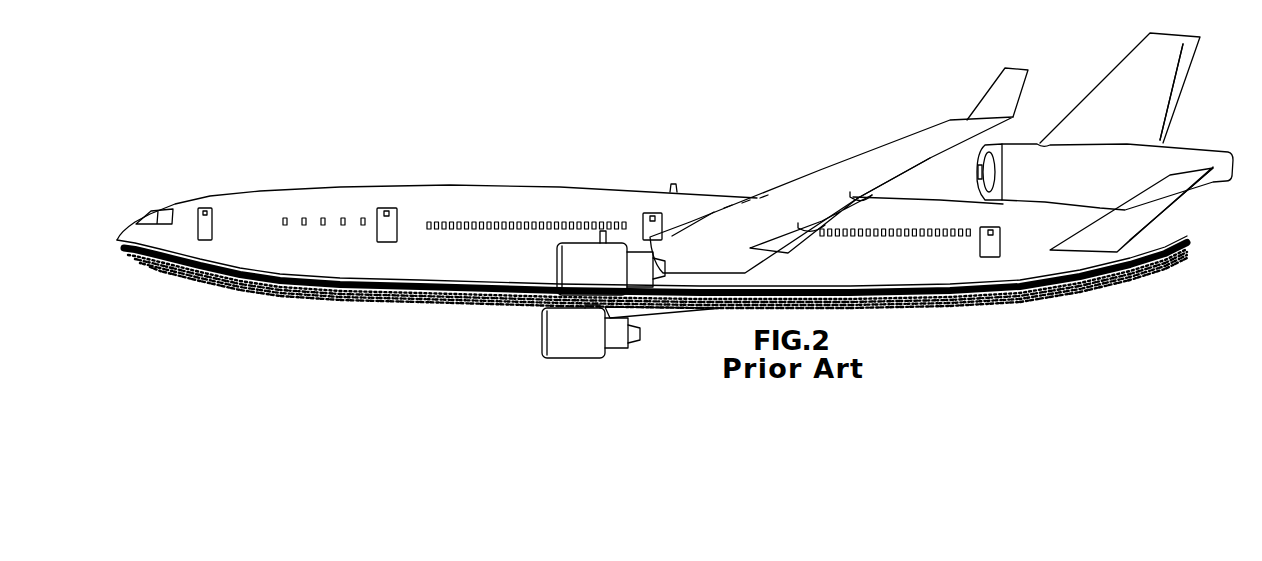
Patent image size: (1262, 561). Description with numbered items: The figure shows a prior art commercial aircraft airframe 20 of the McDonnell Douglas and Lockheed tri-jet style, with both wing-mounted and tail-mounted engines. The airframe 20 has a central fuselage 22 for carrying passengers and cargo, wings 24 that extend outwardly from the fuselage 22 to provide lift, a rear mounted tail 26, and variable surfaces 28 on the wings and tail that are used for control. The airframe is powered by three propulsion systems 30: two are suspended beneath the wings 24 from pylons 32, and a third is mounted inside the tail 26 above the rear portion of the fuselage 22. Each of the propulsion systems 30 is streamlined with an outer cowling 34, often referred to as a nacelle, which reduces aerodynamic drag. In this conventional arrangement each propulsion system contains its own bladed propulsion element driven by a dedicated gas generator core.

The aircraft airframe 20 is at (186, 173).
The fuselage 22 is at (447, 187).
The wings 24 is at (790, 183).
The tail 26 is at (1092, 46).
The variable surfaces 28 is at (908, 170).
The propulsion systems 30 is at (545, 257).
The pylons 32 is at (608, 238).
The outer cowlings 34 is at (607, 283).